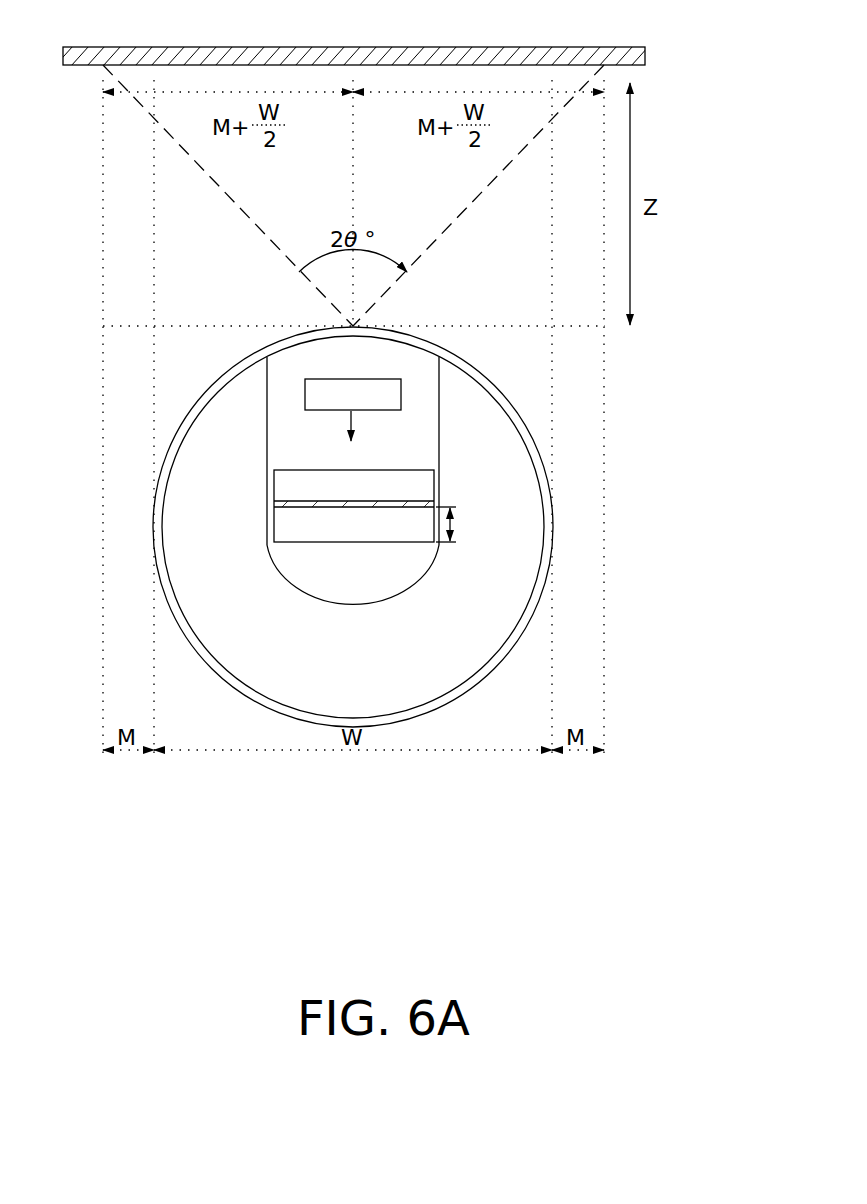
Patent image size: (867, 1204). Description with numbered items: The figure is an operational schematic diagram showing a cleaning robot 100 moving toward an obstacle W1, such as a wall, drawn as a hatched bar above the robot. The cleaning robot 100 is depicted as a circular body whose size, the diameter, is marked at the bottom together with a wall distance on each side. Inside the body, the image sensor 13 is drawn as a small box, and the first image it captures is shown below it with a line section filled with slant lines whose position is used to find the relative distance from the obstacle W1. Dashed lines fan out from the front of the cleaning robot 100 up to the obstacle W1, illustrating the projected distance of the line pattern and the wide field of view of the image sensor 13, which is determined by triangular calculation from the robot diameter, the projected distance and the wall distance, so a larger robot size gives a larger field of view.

The image sensor 13 is at (305, 392).
The cleaning robot 100 is at (525, 628).
The obstacle W1 is at (646, 52).